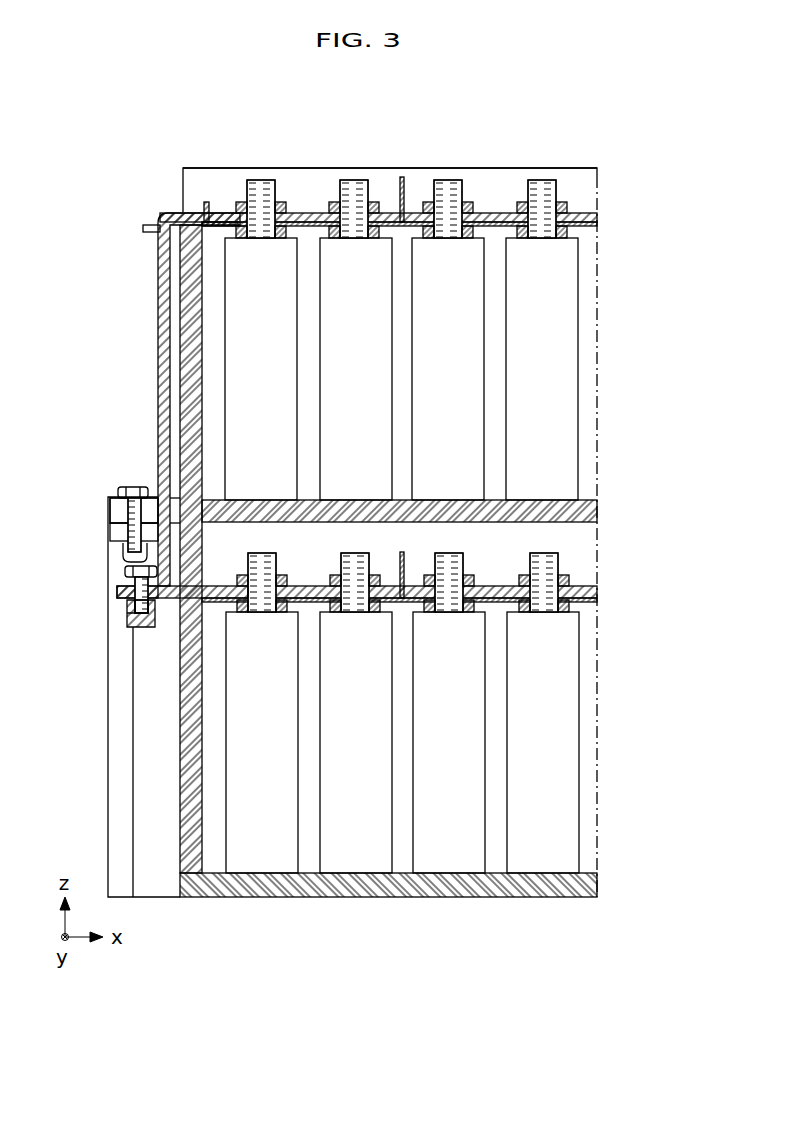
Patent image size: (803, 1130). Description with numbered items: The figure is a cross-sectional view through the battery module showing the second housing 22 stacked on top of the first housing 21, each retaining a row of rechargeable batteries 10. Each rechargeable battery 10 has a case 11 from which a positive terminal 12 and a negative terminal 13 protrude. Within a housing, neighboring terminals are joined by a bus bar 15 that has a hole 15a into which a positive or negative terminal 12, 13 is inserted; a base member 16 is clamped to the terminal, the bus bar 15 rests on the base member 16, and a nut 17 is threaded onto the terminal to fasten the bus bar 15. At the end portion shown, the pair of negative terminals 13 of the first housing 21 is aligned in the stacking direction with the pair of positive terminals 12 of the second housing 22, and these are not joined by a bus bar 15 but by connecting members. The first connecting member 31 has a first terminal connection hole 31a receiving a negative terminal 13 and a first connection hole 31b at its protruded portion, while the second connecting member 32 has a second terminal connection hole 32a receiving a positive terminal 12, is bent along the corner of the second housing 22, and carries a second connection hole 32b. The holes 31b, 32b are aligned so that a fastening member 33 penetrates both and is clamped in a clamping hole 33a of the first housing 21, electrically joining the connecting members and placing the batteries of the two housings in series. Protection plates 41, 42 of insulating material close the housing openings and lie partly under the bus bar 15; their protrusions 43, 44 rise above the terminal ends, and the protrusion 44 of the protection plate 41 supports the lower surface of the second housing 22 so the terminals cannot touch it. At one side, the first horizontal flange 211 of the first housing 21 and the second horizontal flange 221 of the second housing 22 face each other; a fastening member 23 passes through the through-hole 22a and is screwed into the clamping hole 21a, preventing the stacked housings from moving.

The rechargeable battery 10 is at (590, 378).
The case 11 is at (582, 719).
The positive terminal 12 is at (345, 200).
The negative terminal 13 is at (448, 183).
The bus bar 15 is at (490, 213).
The hole 15a is at (552, 597).
The base member 16 is at (563, 240).
The nut 17 is at (213, 213).
The first housing 21 is at (103, 769).
The clamping hole 21a is at (130, 540).
The second housing 22 is at (176, 343).
The through-hole 22a is at (115, 503).
The fastening member 23 is at (132, 487).
The first connecting member 31 is at (168, 630).
The first terminal connection hole 31a is at (254, 596).
The first connection hole 31b is at (138, 603).
The second connecting member 32 is at (158, 290).
The second terminal connection hole 32a is at (232, 245).
The second connection hole 32b is at (120, 590).
The fastening member 33 is at (125, 572).
The clamping hole 33a is at (136, 626).
The protection plate 41 is at (492, 603).
The protection plate 42 is at (580, 228).
The protrusion 43 is at (420, 533).
The protrusion 44 is at (385, 172).
The first horizontal flange 211 is at (118, 532).
The second horizontal flange 221 is at (115, 510).